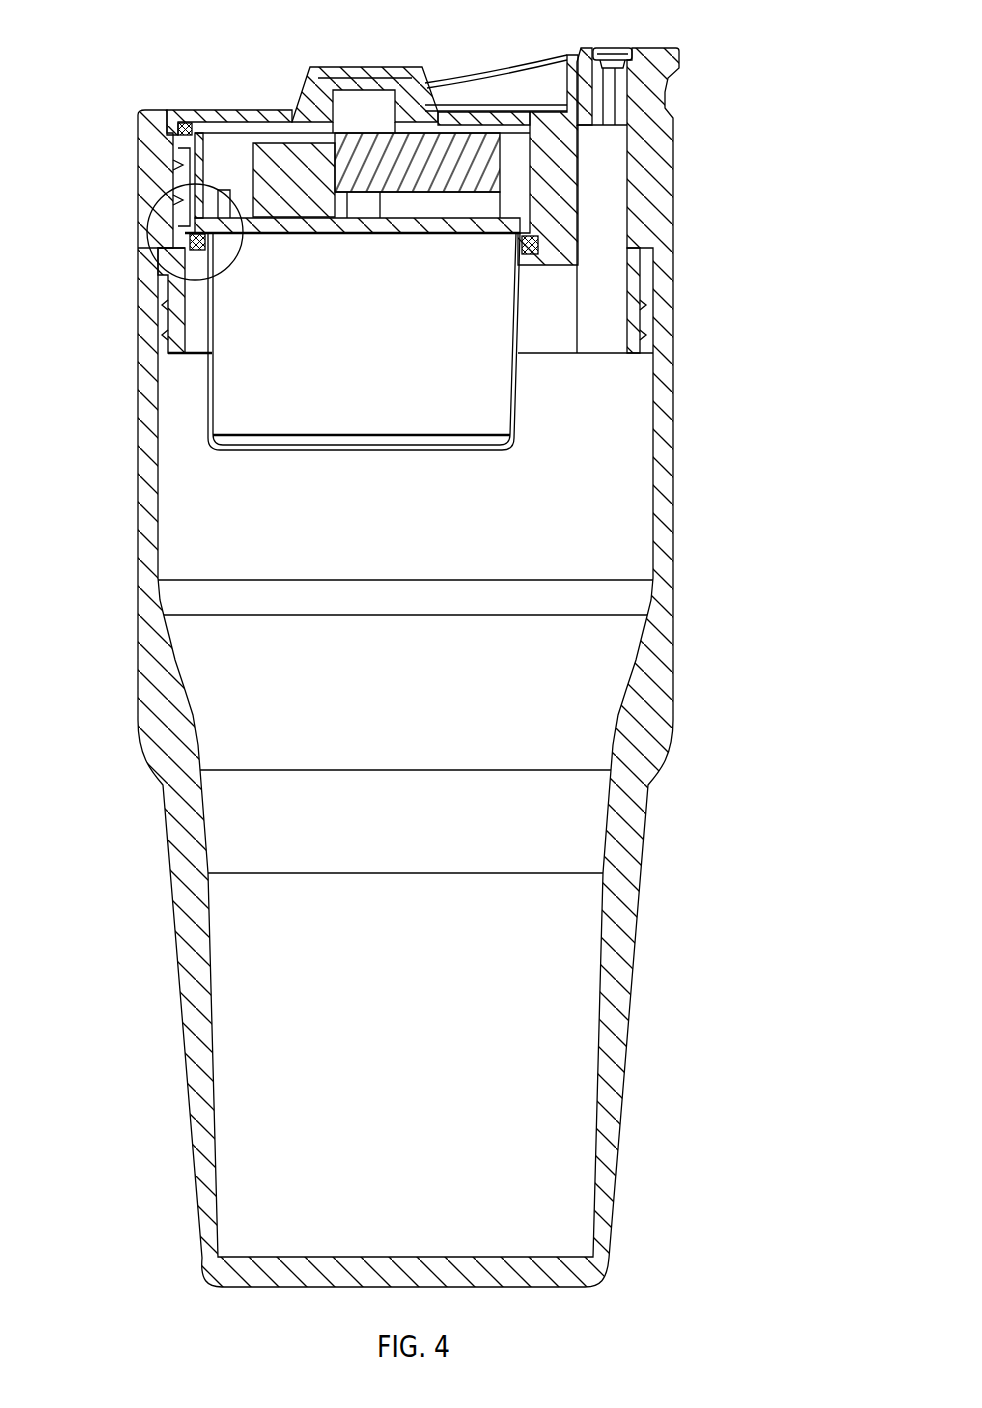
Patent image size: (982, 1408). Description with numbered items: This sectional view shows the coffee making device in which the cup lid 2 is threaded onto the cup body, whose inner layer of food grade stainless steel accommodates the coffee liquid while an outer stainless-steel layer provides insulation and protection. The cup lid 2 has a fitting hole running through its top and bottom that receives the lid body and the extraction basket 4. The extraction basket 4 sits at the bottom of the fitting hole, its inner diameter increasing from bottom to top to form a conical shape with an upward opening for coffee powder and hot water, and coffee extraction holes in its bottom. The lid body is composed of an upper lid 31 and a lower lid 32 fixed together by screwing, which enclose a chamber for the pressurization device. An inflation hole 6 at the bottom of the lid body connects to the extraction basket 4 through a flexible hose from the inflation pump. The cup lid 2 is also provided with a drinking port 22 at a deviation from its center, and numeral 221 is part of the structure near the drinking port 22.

The cup lid 2 is at (663, 190).
The extraction basket 4 is at (222, 410).
The inflation hole 6 is at (225, 130).
The drinking port 22 is at (615, 103).
The screw 221 is at (617, 55).
The upper lid 31 is at (217, 127).
The lower lid 32 is at (218, 197).